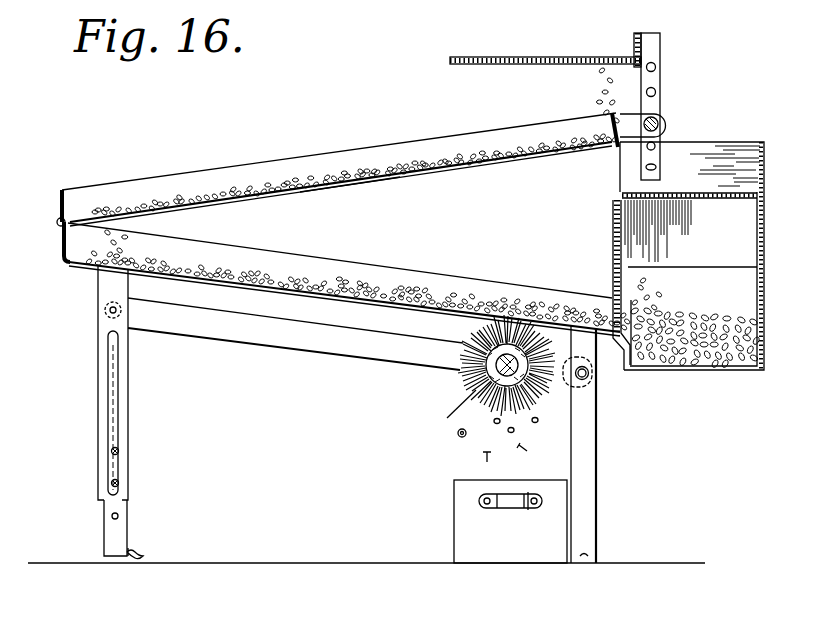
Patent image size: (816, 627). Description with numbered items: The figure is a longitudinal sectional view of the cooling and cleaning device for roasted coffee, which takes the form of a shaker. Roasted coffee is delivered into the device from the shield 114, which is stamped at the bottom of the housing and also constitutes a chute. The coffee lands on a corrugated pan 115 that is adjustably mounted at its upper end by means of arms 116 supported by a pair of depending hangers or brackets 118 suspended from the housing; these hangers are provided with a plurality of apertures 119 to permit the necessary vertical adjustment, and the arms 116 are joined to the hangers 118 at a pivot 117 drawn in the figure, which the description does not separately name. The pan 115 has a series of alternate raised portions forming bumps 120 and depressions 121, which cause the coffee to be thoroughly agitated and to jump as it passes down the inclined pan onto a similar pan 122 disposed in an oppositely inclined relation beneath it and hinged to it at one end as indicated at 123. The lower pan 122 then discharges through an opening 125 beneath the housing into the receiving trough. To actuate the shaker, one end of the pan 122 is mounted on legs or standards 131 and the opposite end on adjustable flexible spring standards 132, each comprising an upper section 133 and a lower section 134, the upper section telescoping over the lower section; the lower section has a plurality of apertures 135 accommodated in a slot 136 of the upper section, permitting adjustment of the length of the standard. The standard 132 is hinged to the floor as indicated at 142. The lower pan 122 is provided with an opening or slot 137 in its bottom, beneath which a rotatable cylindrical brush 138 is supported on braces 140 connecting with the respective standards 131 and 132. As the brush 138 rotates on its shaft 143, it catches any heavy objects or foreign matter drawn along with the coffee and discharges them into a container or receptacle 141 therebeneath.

The shield 114 is at (620, 72).
The corrugated pan 115 is at (424, 173).
The arms 116 is at (640, 114).
The pivot pin 117 is at (662, 124).
The depending hangers or brackets 118 is at (659, 91).
The apertures 119 is at (656, 91).
The bumps 120 is at (372, 177).
The depressions 121 is at (345, 196).
The lower pan 122 is at (405, 275).
The hinge 123 is at (58, 231).
The opening 125 is at (614, 251).
The legs or standards 131 is at (581, 458).
The adjustable flexible spring standards 132 is at (140, 405).
The upper section 133 is at (103, 346).
The lower section 134 is at (117, 539).
The apertures 135 is at (118, 451).
The slot 136 is at (113, 371).
The opening or slot 137 is at (480, 323).
The rotatable cylindrical brush 138 is at (461, 379).
The braces 140 is at (338, 343).
The container or receptacle 141 is at (485, 536).
The hinge 142 is at (137, 553).
The shaft 143 is at (447, 418).